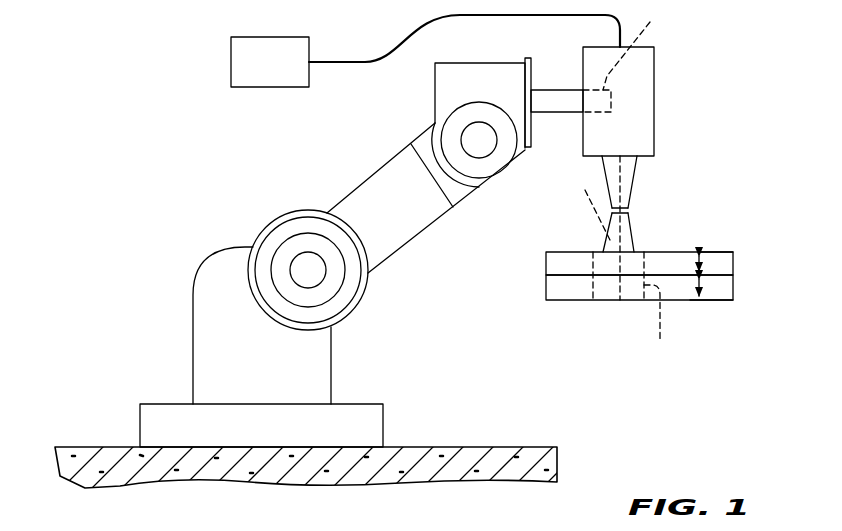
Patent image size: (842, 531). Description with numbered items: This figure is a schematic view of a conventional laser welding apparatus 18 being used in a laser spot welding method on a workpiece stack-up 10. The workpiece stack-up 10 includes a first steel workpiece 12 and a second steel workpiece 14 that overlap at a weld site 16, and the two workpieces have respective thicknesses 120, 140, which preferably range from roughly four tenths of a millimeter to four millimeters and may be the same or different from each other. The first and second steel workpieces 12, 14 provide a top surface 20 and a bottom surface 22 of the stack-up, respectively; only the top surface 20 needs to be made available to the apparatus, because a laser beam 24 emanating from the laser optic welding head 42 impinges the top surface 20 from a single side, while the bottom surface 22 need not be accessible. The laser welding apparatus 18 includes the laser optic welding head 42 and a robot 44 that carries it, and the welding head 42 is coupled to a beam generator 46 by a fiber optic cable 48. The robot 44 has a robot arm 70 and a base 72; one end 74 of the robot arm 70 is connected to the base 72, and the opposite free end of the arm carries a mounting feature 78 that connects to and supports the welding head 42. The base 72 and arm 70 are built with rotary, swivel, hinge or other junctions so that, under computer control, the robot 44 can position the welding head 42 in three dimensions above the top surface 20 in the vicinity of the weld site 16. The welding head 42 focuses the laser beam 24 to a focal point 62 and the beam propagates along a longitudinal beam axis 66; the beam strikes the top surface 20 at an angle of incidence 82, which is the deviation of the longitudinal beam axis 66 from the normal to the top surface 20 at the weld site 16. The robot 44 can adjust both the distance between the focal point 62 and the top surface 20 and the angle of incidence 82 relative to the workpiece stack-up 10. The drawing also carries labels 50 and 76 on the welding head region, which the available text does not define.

The workpiece stack-up 10 is at (528, 285).
The first steel workpiece 12 is at (722, 263).
The second steel workpiece 14 is at (722, 288).
The weld site 16 is at (634, 311).
The laser welding apparatus 18 is at (210, 158).
The top surface 20 is at (708, 252).
The bottom surface 22 is at (697, 300).
The laser beam 24 is at (630, 180).
The laser optic welding head 42 is at (660, 98).
The robot 44 is at (422, 246).
The beam generator 46 is at (284, 74).
The fiber optic cable 48 is at (392, 50).
The tool housing 50 is at (655, 140).
The focal point 62 is at (628, 222).
The longitudinal beam axis 66 is at (605, 172).
The robot arm 70 is at (369, 195).
The base 72 is at (168, 404).
The end of the robot arm 74 is at (308, 375).
The spindle shaft 76 is at (560, 100).
The mounting feature 78 is at (637, 45).
The angle of incidence 82 is at (605, 190).
The thickness of the first steel workpiece 120 is at (702, 265).
The thickness of the second steel workpiece 140 is at (703, 285).